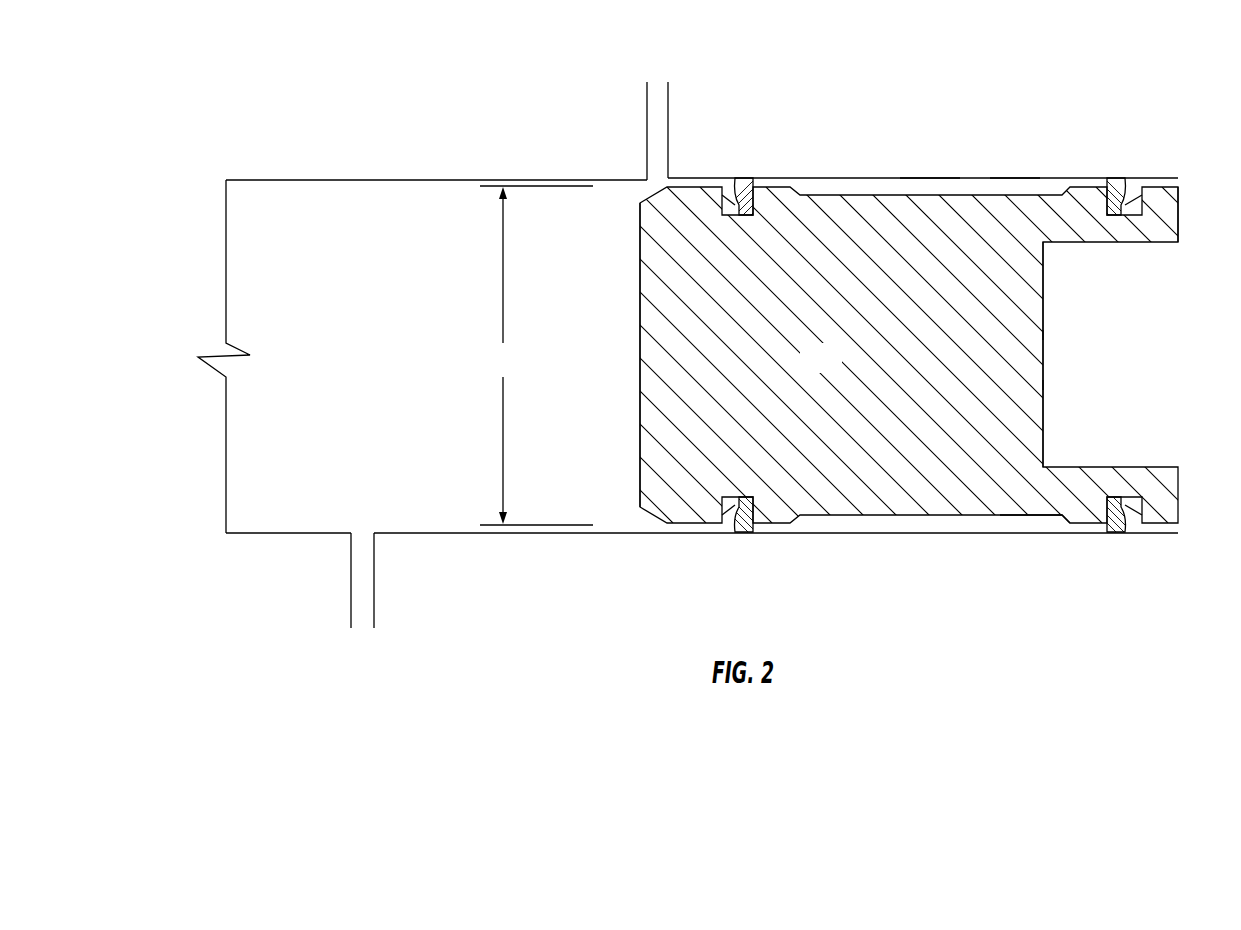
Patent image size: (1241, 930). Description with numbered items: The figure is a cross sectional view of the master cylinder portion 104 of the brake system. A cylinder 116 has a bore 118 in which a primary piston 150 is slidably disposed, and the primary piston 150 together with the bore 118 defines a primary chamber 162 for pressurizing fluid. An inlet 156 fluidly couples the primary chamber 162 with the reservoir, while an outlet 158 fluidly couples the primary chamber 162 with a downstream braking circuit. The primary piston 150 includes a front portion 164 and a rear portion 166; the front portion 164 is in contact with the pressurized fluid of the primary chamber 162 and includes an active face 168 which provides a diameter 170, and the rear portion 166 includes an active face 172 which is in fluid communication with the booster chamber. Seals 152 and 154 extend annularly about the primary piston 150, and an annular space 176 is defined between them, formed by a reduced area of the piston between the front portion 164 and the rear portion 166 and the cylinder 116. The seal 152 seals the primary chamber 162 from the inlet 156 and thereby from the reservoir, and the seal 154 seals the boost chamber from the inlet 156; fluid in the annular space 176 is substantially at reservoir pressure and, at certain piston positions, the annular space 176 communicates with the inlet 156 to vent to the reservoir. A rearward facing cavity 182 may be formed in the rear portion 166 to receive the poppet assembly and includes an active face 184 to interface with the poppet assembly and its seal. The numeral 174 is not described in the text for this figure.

The master cylinder portion 104 is at (251, 100).
The cylinder 116 is at (1060, 178).
The bore 118 is at (326, 181).
The primary piston 150 is at (1063, 516).
The seal 152 is at (730, 512).
The seal 154 is at (1128, 522).
The inlet 156 is at (668, 114).
The outlet 158 is at (374, 598).
The primary chamber 162 is at (330, 336).
The front portion 164 is at (837, 370).
The rear portion 166 is at (1044, 273).
The active face 168 is at (640, 332).
The diameter 170 is at (536, 355).
The active face 172 is at (1180, 216).
The seal assembly 174 is at (1014, 162).
The annular space 176 is at (946, 188).
The rearward facing cavity 182 is at (1135, 390).
The active face 184 is at (1044, 458).